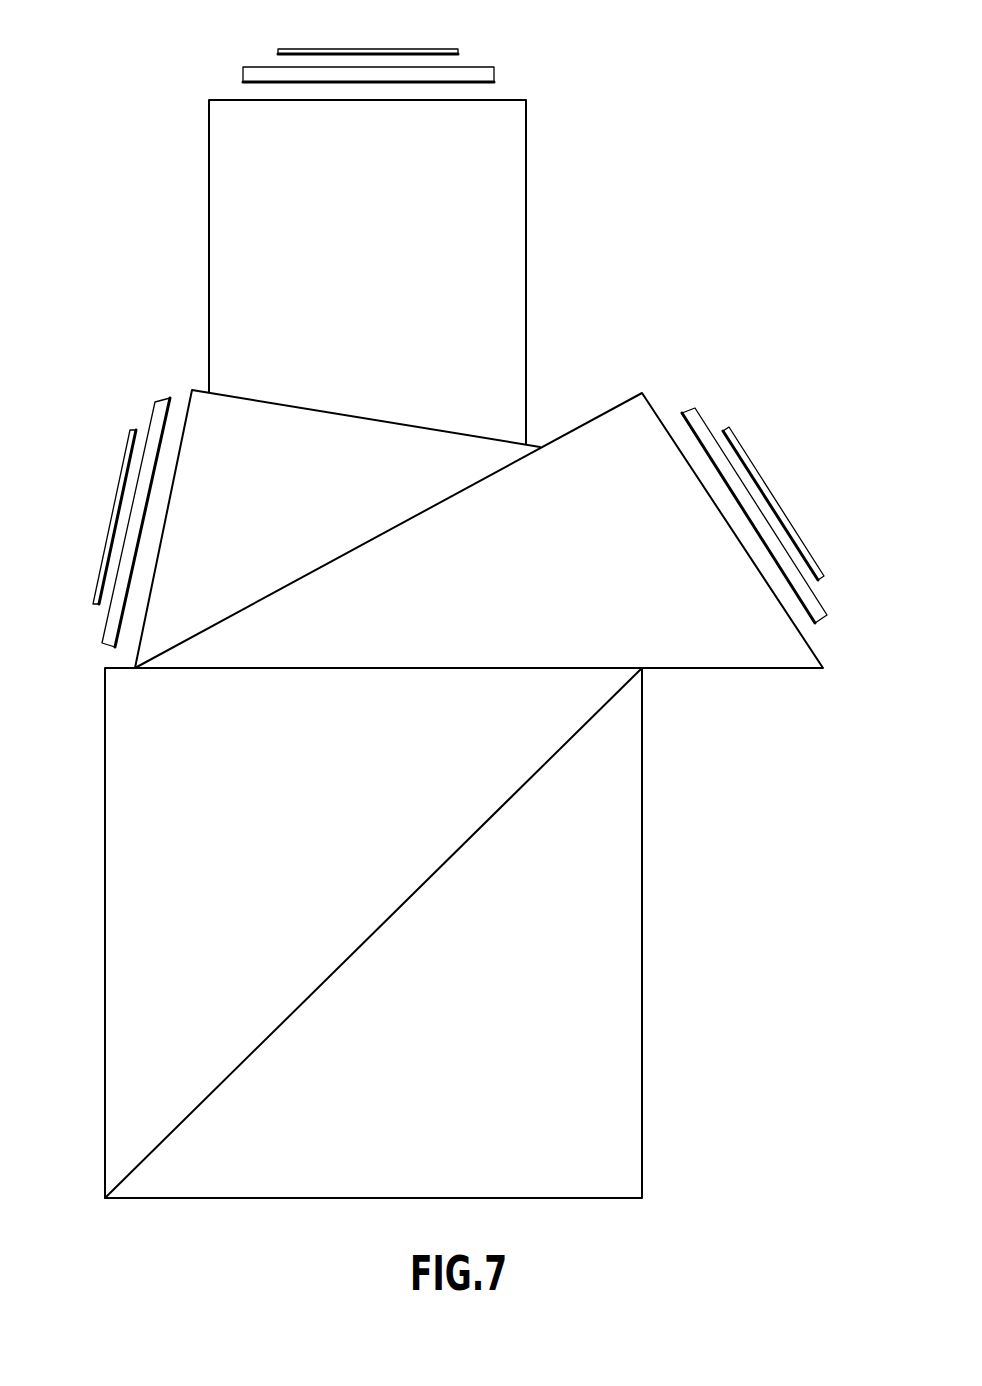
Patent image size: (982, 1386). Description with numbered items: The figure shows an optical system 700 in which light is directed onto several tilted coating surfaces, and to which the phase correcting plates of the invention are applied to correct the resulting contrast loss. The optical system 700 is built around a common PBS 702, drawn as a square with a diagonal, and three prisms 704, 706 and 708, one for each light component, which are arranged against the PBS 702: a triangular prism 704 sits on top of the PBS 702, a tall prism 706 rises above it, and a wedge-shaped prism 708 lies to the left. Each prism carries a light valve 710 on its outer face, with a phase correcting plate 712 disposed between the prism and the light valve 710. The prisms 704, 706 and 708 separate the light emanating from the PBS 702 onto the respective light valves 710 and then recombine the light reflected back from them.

The optical system 700 is at (645, 48).
The common PBS 702 is at (644, 968).
The prism 704 is at (708, 670).
The prism 706 is at (209, 250).
The prism 708 is at (190, 400).
The light valve 710 is at (308, 48).
The phase correcting plate 712 is at (244, 68).